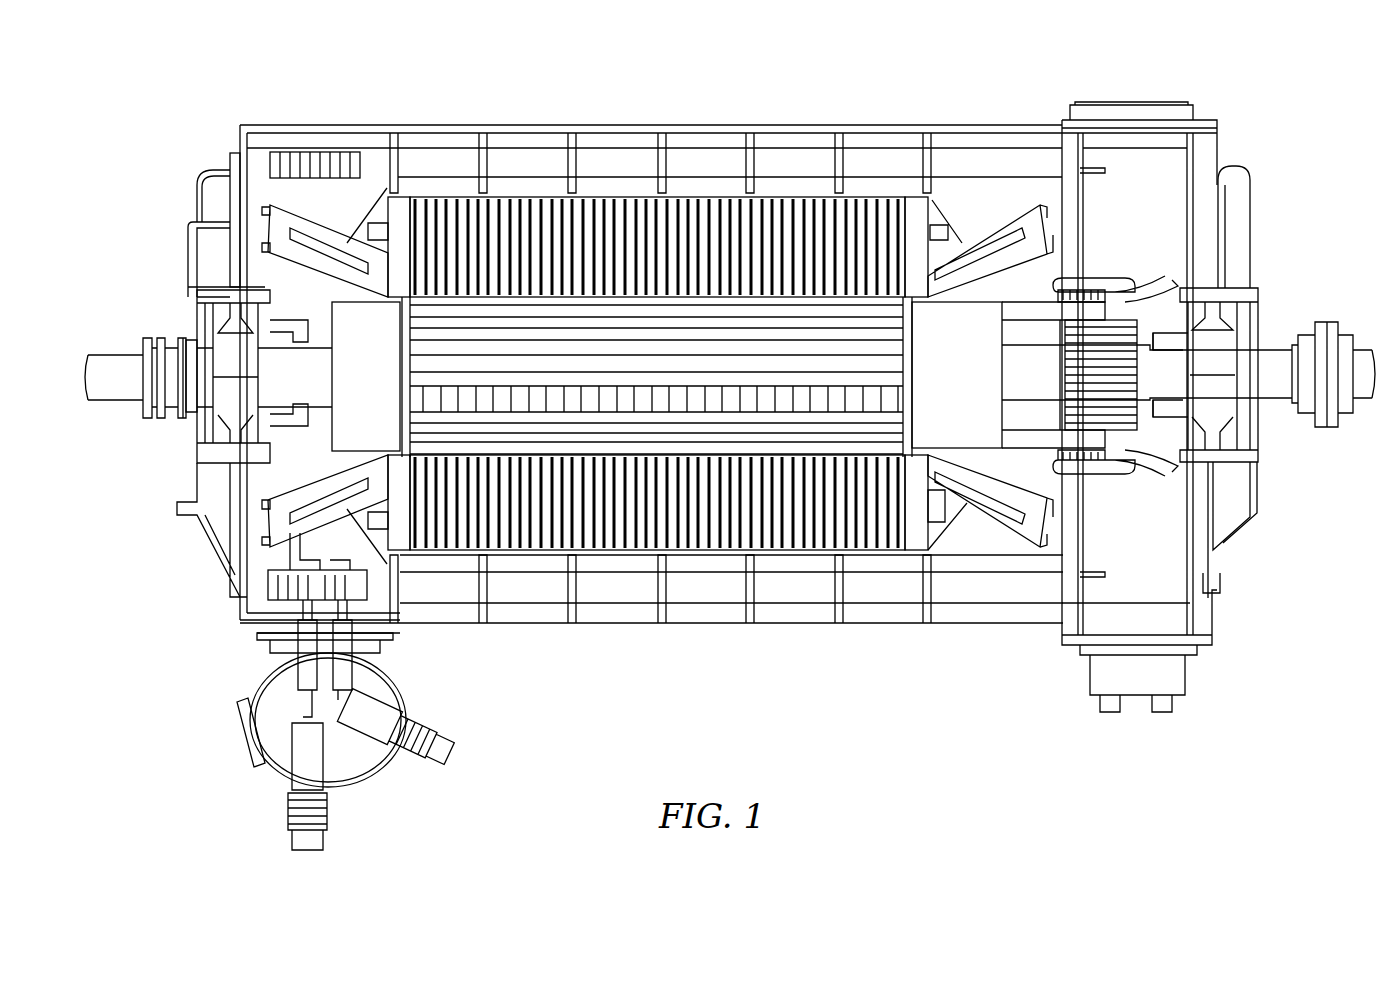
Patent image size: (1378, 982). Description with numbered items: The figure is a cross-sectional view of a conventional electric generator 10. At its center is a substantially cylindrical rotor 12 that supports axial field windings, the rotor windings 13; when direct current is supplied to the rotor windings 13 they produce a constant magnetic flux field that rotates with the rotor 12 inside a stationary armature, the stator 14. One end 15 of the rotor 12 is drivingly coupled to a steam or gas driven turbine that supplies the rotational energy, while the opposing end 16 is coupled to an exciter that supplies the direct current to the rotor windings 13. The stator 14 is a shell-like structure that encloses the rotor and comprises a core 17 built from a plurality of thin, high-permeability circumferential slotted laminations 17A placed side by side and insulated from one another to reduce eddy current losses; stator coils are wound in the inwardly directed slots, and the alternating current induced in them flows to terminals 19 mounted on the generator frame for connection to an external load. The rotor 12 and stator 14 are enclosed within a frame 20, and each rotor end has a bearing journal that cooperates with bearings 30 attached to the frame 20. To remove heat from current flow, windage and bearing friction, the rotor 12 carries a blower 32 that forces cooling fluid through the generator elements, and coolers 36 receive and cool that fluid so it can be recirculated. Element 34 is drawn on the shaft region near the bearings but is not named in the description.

The electric generator 10 is at (1240, 76).
The rotor 12 is at (848, 435).
The rotor windings 13 is at (632, 375).
The stator 14 is at (598, 553).
The one end of the rotor 15 is at (1372, 340).
The opposing end of the rotor 16 is at (122, 352).
The core 17 is at (553, 205).
The slotted laminations 17A is at (830, 215).
The terminals 19 is at (430, 758).
The frame 20 is at (345, 124).
The bearings 30 is at (237, 397).
The blower 32 is at (1085, 355).
The shaft seals 34 is at (197, 333).
The coolers 36 is at (1147, 155).